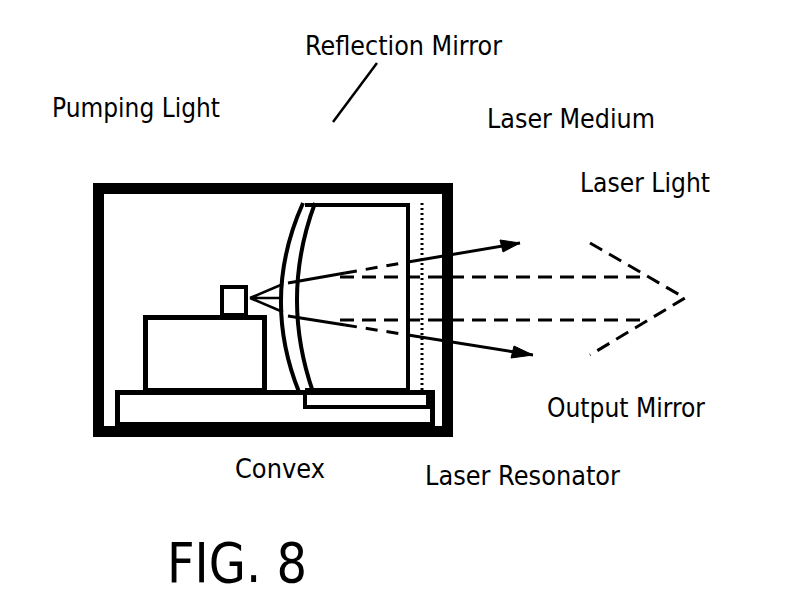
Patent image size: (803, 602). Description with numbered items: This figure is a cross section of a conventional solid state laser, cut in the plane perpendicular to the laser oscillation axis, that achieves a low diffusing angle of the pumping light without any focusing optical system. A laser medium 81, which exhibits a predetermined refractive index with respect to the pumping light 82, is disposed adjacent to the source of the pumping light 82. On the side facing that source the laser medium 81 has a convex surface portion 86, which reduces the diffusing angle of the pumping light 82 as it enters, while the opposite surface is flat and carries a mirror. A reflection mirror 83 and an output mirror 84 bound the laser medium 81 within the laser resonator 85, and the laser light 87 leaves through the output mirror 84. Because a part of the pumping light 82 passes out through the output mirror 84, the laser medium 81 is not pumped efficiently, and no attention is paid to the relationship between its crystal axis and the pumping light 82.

The laser medium 81 is at (378, 227).
The pumping light 82 is at (262, 290).
The reflection mirror 83 is at (305, 210).
The output mirror 84 is at (417, 363).
The laser resonator 85 is at (370, 398).
The convex surface portion 86 is at (288, 353).
The laser light 87 is at (485, 252).